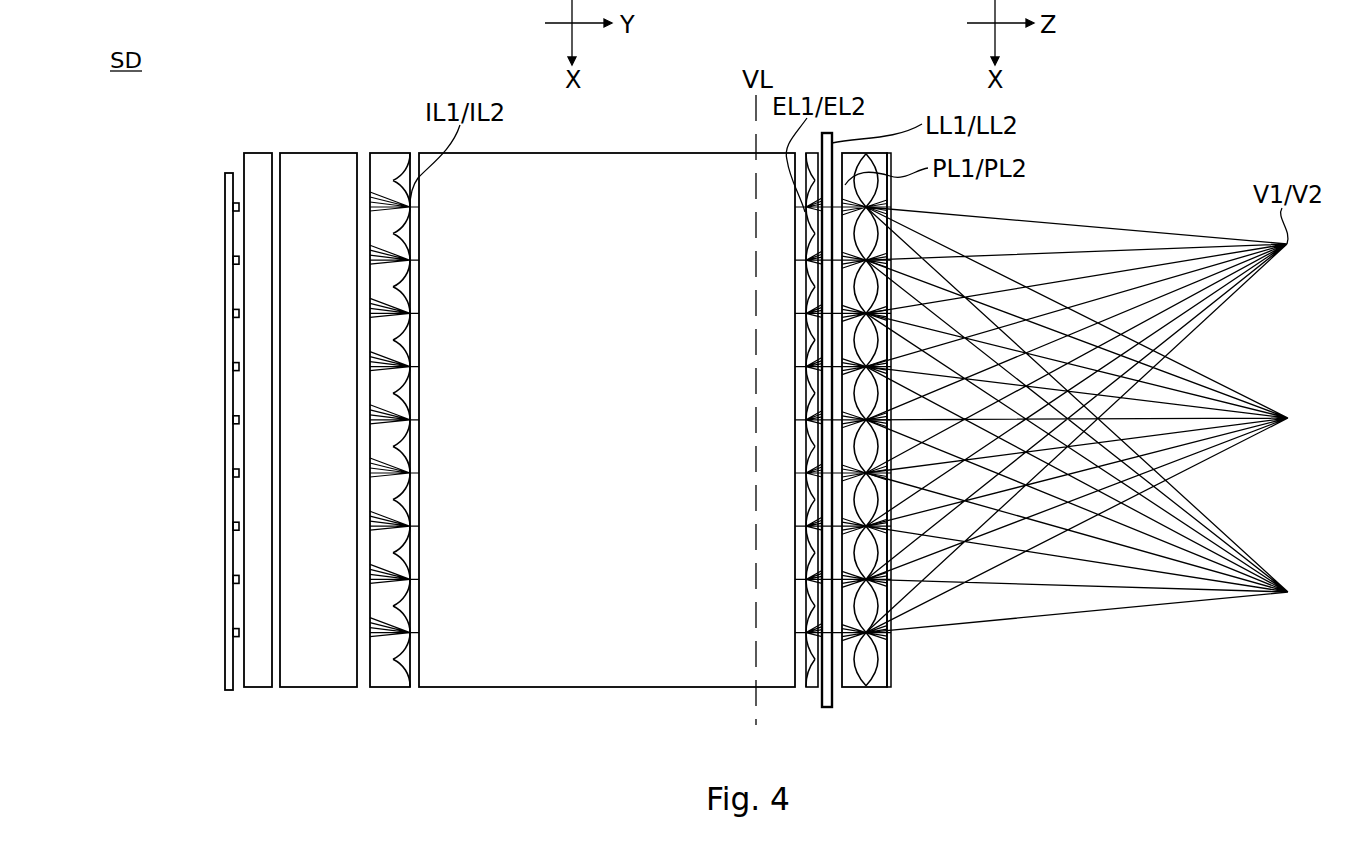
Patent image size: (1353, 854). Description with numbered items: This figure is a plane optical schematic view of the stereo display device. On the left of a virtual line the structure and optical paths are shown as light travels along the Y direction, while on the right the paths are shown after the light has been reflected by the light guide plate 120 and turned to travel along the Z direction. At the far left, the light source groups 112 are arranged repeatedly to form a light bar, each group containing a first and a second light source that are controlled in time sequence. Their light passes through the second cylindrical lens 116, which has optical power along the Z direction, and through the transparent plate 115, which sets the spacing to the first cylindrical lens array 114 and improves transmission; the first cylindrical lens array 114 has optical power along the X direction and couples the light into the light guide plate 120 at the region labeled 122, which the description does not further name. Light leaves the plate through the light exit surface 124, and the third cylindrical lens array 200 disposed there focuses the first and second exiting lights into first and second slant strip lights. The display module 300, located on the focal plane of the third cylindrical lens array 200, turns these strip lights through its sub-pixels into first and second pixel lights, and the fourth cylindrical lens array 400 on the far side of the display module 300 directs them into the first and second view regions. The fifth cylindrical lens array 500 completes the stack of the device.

The light source groups 112 is at (233, 207).
The first cylindrical lens array 114 is at (385, 405).
The transparent plate 115 is at (312, 665).
The second cylindrical lens 116 is at (260, 160).
The light guide plate 120 is at (528, 667).
The incident lenses 122 is at (408, 683).
The light exit surface 124 is at (810, 688).
The third cylindrical lens array 200 is at (813, 688).
The display module 300 is at (832, 698).
The fourth cylindrical lens array 400 is at (855, 687).
The fifth cylindrical lens array 500 is at (888, 673).